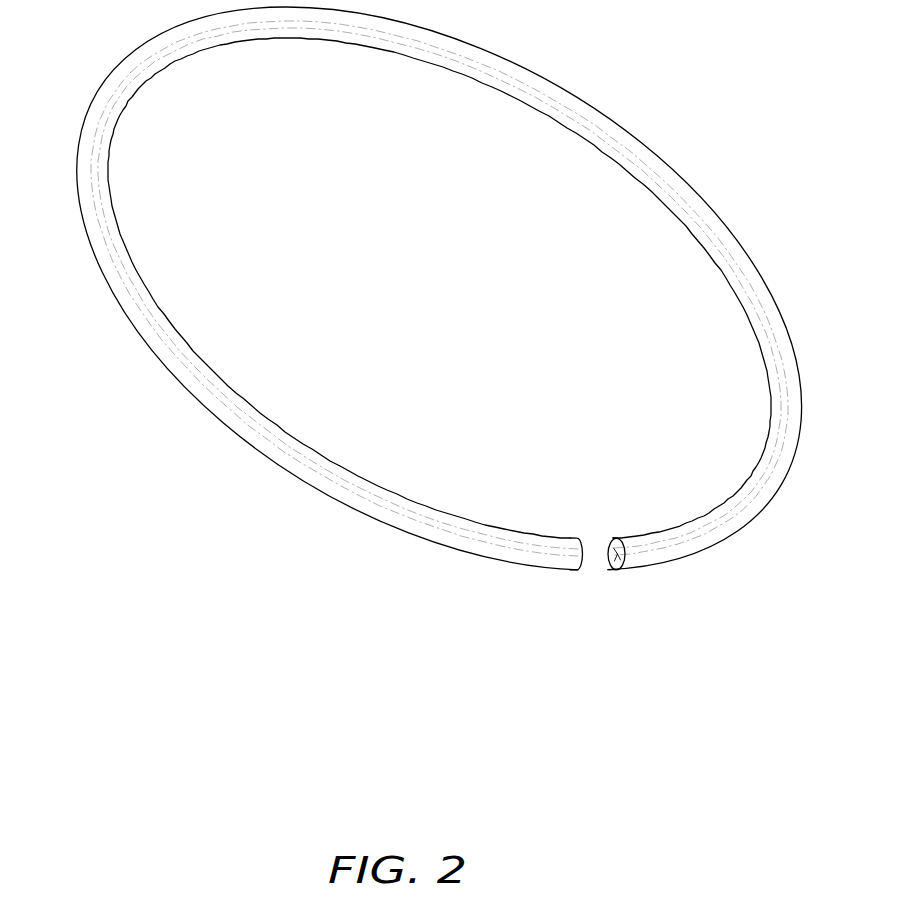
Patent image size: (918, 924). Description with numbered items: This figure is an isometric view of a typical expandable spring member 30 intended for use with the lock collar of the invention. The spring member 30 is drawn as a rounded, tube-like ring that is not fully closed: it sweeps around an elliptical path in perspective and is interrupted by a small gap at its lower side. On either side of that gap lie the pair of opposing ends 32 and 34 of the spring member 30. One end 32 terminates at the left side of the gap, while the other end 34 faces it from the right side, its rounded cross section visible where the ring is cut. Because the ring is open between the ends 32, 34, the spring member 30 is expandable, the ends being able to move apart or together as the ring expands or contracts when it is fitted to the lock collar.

The first expandable spring member 30 is at (340, 487).
The opposing end 32 is at (580, 571).
The opposing end 34 is at (610, 570).